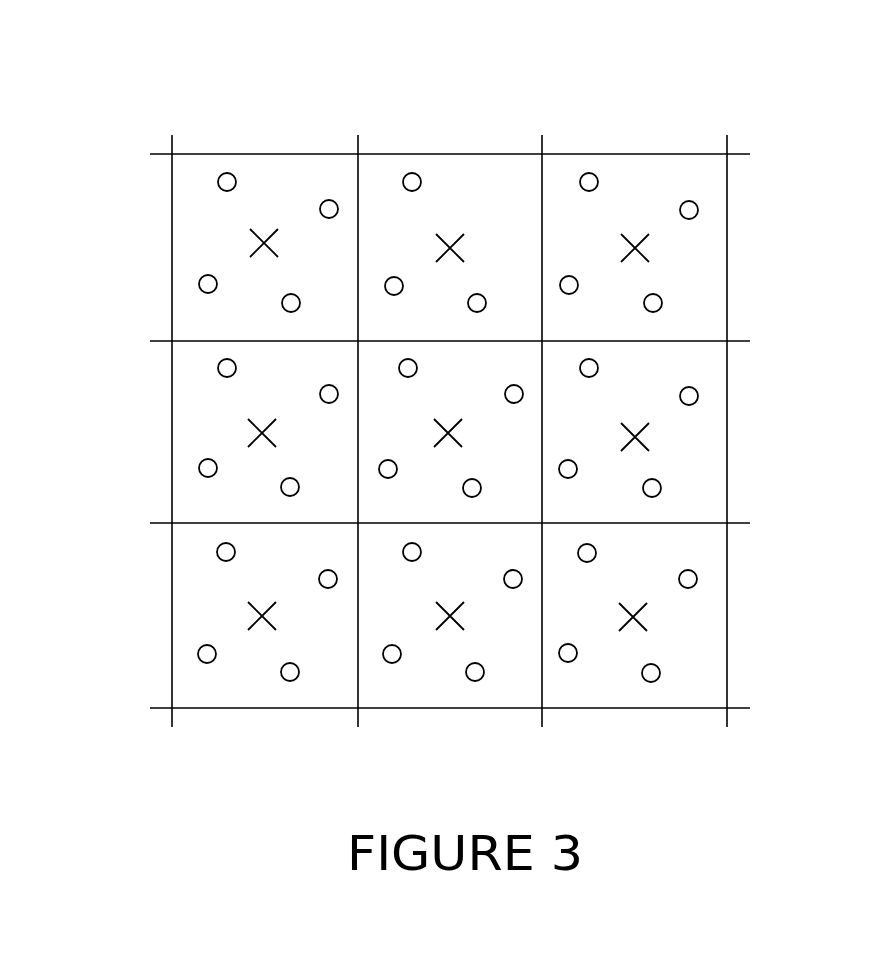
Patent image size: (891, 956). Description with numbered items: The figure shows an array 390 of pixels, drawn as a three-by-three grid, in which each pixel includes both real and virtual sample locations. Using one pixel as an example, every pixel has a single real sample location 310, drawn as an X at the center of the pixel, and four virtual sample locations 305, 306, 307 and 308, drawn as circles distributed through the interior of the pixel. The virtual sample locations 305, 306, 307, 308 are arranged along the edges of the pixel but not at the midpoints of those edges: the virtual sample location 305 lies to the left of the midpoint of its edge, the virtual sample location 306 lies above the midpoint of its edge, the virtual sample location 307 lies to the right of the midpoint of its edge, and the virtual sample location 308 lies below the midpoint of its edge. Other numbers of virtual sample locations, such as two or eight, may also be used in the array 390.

The array of pixels 390 is at (72, 45).
The virtual sample location 305 is at (406, 360).
The real sample location 310 is at (465, 415).
The virtual sample location 306 is at (523, 394).
The virtual sample location 307 is at (481, 490).
The virtual sample location 308 is at (379, 469).